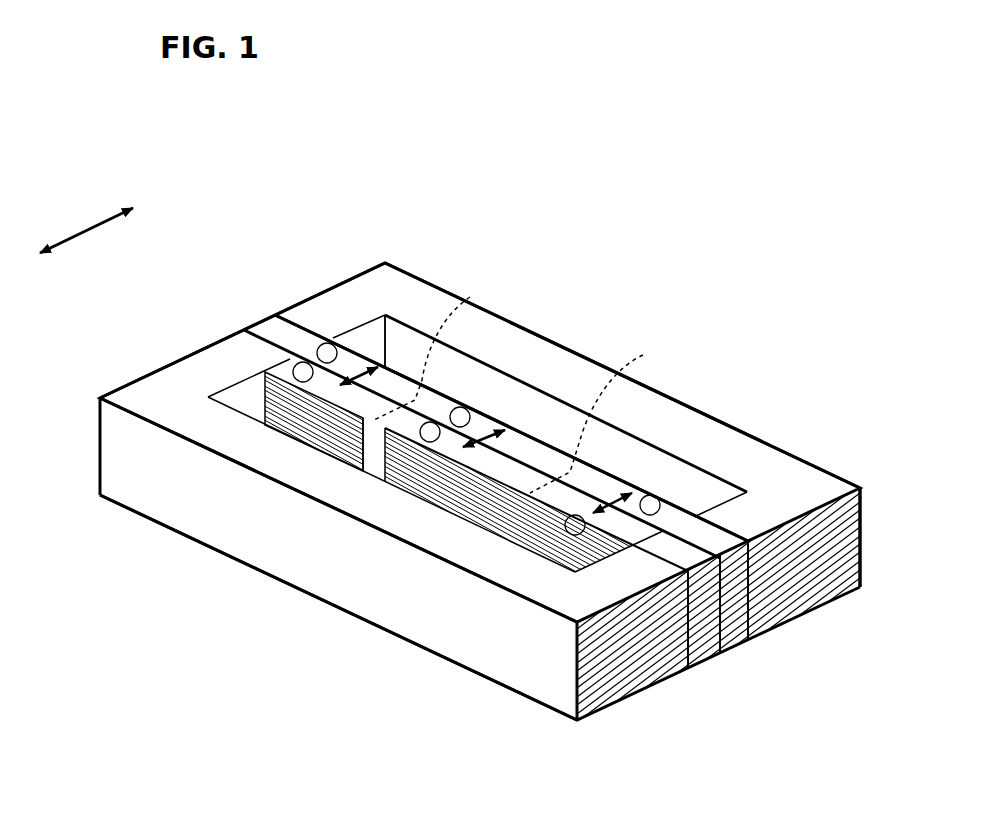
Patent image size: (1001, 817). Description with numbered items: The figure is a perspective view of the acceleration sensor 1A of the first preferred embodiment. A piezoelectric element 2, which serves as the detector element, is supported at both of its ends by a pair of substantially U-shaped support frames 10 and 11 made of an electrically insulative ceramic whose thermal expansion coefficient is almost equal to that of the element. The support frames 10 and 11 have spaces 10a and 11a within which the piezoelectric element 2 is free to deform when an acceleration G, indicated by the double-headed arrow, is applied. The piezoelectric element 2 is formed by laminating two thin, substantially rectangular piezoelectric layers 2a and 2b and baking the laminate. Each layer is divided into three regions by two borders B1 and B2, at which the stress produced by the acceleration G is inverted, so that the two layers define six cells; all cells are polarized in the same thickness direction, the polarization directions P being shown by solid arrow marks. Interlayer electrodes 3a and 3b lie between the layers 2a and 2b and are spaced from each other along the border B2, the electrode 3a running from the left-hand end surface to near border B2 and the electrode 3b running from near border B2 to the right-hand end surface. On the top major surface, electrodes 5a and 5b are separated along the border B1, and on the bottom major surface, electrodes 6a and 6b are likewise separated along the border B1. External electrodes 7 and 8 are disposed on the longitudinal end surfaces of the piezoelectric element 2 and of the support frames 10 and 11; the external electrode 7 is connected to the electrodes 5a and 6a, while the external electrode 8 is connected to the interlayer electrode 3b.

The acceleration sensor 1A is at (692, 275).
The piezoelectric element 2 is at (222, 258).
The piezoelectric layer 2a is at (268, 328).
The piezoelectric layer 2b is at (233, 340).
The interlayer electrode 3a is at (510, 452).
The interlayer electrode 3b is at (755, 545).
The top major surface electrode 5a is at (323, 338).
The top major surface electrode 5b is at (640, 432).
The bottom major surface electrode 6a is at (305, 420).
The bottom major surface electrode 6b is at (477, 513).
The external electrode 7 is at (135, 387).
The external electrode 8 is at (635, 668).
The support frame 10 is at (578, 363).
The space 10a is at (683, 477).
The support frame 11 is at (368, 598).
The space 11a is at (337, 450).
The polarization direction P is at (352, 372).
The border B1 is at (441, 347).
The border B2 is at (607, 412).
The acceleration G is at (86, 219).